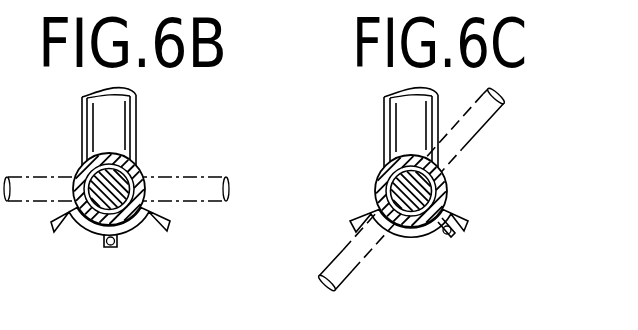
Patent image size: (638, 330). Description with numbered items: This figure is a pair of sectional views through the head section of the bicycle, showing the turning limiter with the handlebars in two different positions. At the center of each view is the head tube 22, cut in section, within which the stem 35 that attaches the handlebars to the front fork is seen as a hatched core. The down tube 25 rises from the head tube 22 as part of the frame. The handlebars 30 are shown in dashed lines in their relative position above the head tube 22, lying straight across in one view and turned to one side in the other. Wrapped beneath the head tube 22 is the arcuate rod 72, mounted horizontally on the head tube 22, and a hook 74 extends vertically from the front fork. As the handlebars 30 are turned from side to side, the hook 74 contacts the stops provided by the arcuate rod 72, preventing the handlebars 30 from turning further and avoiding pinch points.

In FIG. 6B, the head tube 22 is at (141, 172).
In FIG. 6C, the head tube 22 is at (445, 189).
In FIG. 6B, the down tube 25 is at (123, 138).
In FIG. 6C, the down tube 25 is at (400, 126).
In FIG. 6B, the handlebars 30 is at (201, 203).
In FIG. 6C, the handlebars 30 is at (457, 152).
In FIG. 6B, the stem 35 is at (100, 190).
In FIG. 6C, the stem 35 is at (398, 186).
In FIG. 6B, the arcuate rod 72 is at (153, 227).
In FIG. 6C, the arcuate rod 72 is at (449, 213).
In FIG. 6B, the hook 74 is at (110, 248).
In FIG. 6C, the hook 74 is at (443, 236).